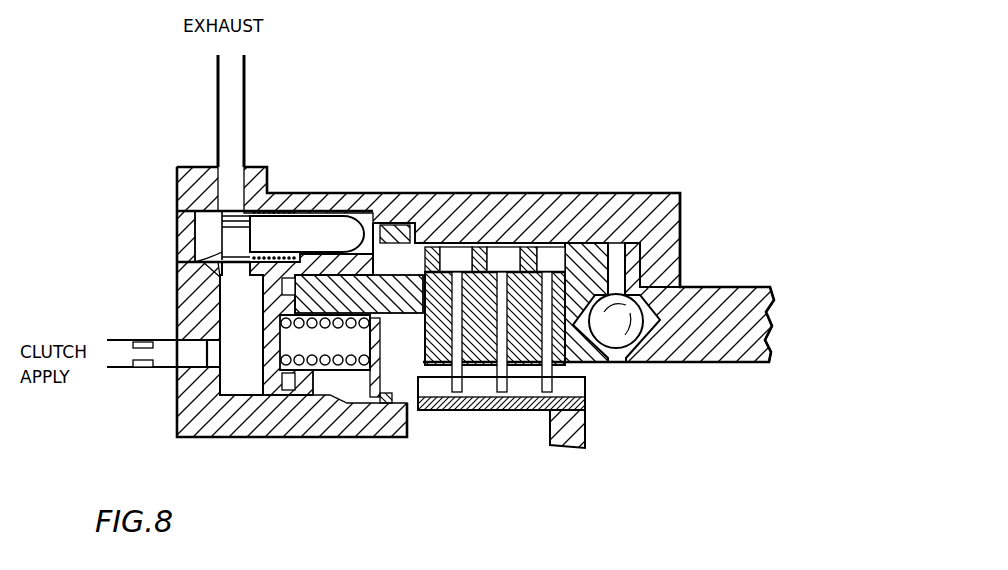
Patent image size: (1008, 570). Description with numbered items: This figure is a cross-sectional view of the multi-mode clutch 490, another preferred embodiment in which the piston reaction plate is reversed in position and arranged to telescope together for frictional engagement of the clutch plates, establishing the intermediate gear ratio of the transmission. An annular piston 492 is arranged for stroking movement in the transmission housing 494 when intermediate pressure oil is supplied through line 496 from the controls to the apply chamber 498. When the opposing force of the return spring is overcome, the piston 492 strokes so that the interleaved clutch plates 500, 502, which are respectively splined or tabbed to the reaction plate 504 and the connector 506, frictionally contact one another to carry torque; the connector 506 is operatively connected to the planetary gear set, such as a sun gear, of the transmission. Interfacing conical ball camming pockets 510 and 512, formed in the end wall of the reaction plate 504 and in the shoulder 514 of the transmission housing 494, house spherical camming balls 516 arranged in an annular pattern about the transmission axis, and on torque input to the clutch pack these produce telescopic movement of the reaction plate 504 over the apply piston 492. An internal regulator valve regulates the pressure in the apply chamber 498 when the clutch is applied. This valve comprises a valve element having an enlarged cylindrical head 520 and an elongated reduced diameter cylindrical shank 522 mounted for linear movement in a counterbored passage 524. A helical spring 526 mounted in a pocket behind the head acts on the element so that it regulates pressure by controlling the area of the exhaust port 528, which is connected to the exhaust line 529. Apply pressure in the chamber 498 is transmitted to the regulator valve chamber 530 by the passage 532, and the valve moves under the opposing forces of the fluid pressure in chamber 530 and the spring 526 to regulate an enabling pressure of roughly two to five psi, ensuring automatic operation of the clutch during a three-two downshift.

The multi-mode clutch 490 is at (604, 140).
The annular piston 492 is at (388, 292).
The transmission housing 494 is at (607, 192).
The line 496 is at (118, 358).
The apply chamber 498 is at (242, 385).
The clutch plate 500 is at (505, 240).
The clutch plate 502 is at (488, 410).
The reaction plate 504 is at (690, 197).
The connector 506 is at (575, 452).
The conical ball camming pocket 510 is at (615, 364).
The conical ball camming pocket 512 is at (682, 290).
The shoulder 514 is at (683, 233).
The spherical camming ball 516 is at (665, 255).
The enlarged cylindrical head 520 is at (317, 237).
The reduced diameter cylindrical shank 522 is at (237, 235).
The counterbored passage 524 is at (182, 265).
The helical spring 526 is at (268, 207).
The exhaust port 528 is at (180, 220).
The exhaust line 529 is at (228, 125).
The regulator valve chamber 530 is at (203, 238).
The passage 532 is at (180, 293).